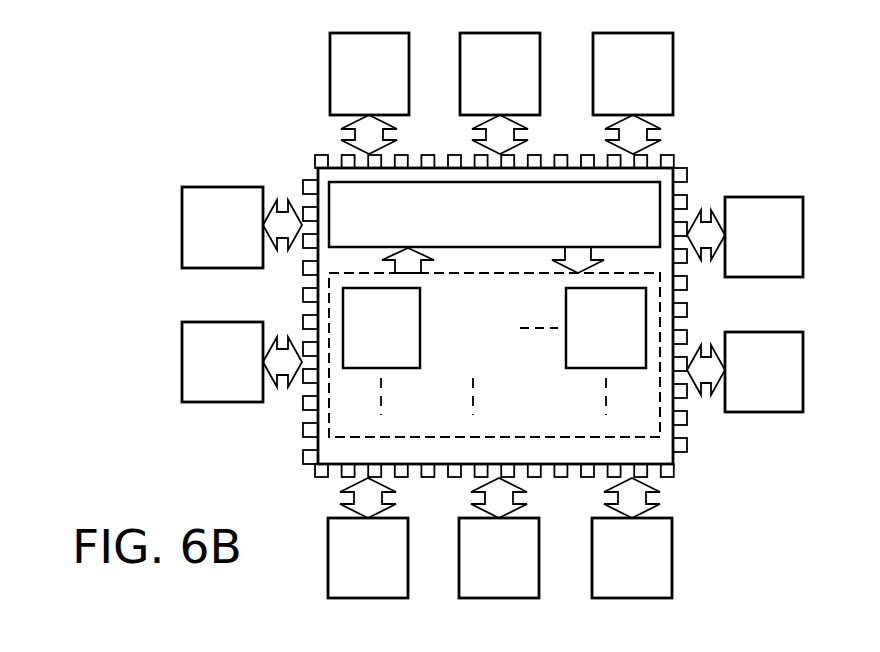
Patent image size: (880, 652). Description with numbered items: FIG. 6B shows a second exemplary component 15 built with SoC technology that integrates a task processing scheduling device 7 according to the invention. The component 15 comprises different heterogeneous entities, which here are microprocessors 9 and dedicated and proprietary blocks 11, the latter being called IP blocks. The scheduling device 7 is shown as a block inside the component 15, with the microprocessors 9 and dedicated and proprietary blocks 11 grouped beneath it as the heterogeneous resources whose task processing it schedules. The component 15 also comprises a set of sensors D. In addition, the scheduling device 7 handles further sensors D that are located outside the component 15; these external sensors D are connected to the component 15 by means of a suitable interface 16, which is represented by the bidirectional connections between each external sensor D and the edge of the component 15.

The component 15 is at (308, 162).
The interface 16 is at (285, 214).
The scheduling device 7 is at (647, 195).
The microprocessor 9 is at (377, 358).
The dedicated and proprietary block 11 is at (589, 358).
The sensors D is at (343, 68).